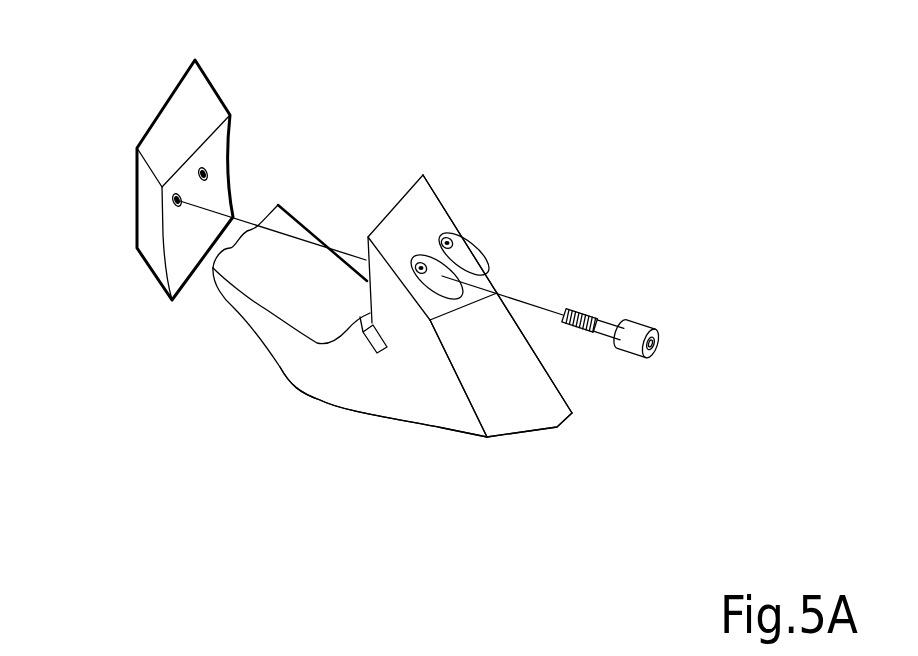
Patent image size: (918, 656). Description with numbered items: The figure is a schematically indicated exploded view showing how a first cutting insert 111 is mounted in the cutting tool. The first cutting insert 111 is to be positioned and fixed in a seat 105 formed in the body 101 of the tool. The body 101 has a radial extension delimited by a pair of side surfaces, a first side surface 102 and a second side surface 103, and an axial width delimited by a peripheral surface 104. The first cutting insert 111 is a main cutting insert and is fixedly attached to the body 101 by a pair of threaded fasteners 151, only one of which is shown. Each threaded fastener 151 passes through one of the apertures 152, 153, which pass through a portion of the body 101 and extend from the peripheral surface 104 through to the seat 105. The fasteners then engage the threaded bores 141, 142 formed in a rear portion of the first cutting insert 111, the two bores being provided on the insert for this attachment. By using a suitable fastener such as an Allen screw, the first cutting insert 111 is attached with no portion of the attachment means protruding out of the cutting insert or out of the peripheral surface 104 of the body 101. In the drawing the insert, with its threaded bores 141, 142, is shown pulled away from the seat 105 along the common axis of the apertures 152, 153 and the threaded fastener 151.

The body 101 is at (402, 411).
The first side surface 102 is at (569, 367).
The second side surface 103 is at (335, 378).
The peripheral surface 104 is at (513, 407).
The seat 105 is at (388, 190).
The first cutting insert 111 is at (198, 103).
The threaded bore 141 is at (207, 171).
The threaded bore 142 is at (173, 201).
The threaded fastener 151 is at (607, 330).
The aperture 152 is at (443, 273).
The aperture 153 is at (468, 252).